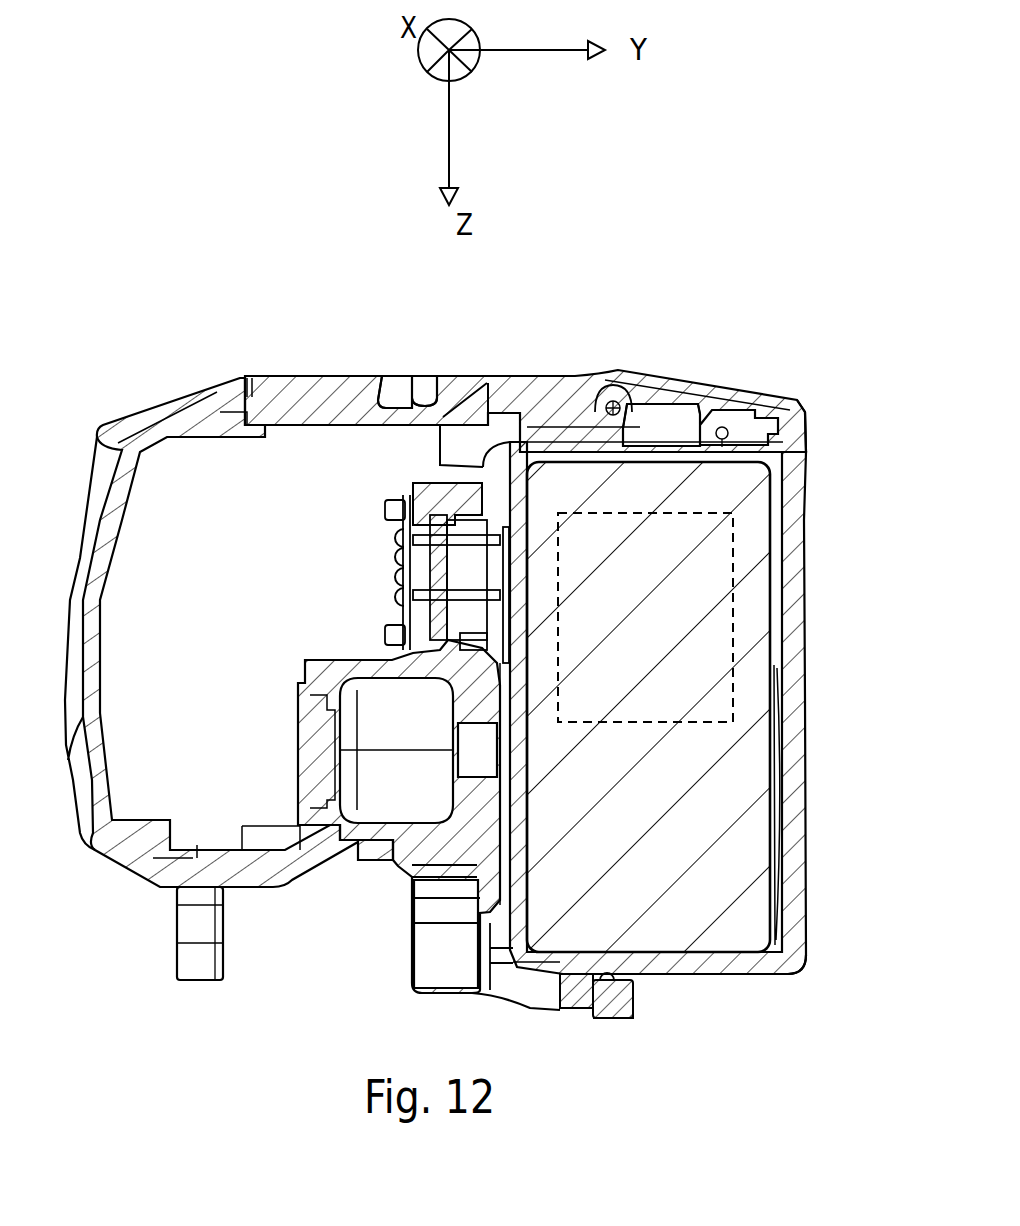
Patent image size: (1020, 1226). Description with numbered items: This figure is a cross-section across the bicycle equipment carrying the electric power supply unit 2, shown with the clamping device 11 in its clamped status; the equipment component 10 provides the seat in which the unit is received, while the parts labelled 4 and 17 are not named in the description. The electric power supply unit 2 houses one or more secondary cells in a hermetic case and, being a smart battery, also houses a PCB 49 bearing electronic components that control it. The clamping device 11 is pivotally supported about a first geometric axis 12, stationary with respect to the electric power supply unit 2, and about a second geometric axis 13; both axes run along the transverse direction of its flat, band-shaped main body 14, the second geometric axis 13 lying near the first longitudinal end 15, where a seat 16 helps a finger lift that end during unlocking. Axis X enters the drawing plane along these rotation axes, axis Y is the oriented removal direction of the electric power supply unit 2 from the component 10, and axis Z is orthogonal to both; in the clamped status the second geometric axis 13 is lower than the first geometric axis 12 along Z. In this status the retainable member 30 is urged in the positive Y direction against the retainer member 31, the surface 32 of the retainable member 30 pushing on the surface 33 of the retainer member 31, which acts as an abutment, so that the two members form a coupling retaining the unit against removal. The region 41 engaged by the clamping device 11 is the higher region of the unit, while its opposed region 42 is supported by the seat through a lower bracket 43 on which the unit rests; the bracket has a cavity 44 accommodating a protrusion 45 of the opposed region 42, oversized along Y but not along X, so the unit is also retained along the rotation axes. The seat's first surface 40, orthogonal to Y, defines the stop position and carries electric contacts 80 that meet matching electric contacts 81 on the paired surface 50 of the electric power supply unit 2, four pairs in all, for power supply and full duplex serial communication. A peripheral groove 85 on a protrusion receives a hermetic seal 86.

The electric power supply unit 2 is at (670, 867).
The power tool 4 is at (240, 348).
The component 10 is at (229, 609).
The clamping device 11 is at (683, 367).
The first geometric axis 12 is at (607, 400).
The second geometric axis 13 is at (717, 418).
The main body 14 is at (522, 392).
The first longitudinal end 15 is at (798, 397).
The seat 16 is at (691, 707).
The latch 17 is at (408, 333).
The retainable member 30 is at (390, 378).
The retainer member 31 is at (455, 383).
The surface of the retainable member 32 is at (480, 403).
The surface of the retainer member 33 is at (400, 392).
The first surface 40 is at (497, 887).
The region 41 is at (665, 440).
The opposed region 42 is at (732, 982).
The lower bracket 43 is at (622, 1022).
The cavity 44 is at (588, 1012).
The protrusion 45 is at (560, 1000).
The PCB 49 is at (783, 535).
The surface 50 is at (562, 968).
The electric contacts 80 is at (430, 597).
The electric contacts 81 is at (498, 598).
The peripheral groove 85 is at (473, 488).
The hermetic seal 86 is at (482, 647).